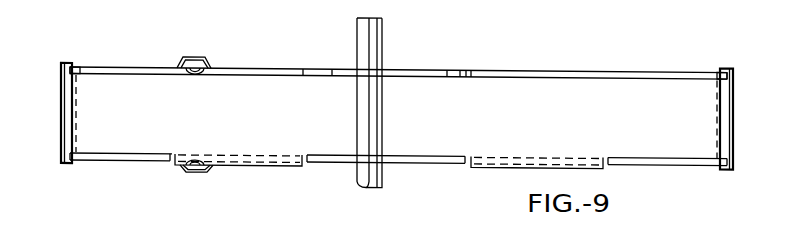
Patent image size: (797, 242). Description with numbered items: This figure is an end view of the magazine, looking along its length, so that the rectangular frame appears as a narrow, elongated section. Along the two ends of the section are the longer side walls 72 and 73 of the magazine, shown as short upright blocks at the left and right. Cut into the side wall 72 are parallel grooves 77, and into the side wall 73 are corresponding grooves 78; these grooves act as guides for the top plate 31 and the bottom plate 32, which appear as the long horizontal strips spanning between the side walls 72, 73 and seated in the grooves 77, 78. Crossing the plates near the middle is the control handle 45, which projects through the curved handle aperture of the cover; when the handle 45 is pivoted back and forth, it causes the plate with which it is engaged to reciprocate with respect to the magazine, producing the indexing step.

The top plate 31 is at (556, 66).
The bottom plate 32 is at (447, 161).
The control handle 45 is at (384, 47).
The side wall 72 is at (70, 67).
The side wall 73 is at (730, 64).
The grooves 77 is at (67, 73).
The grooves 78 is at (733, 74).